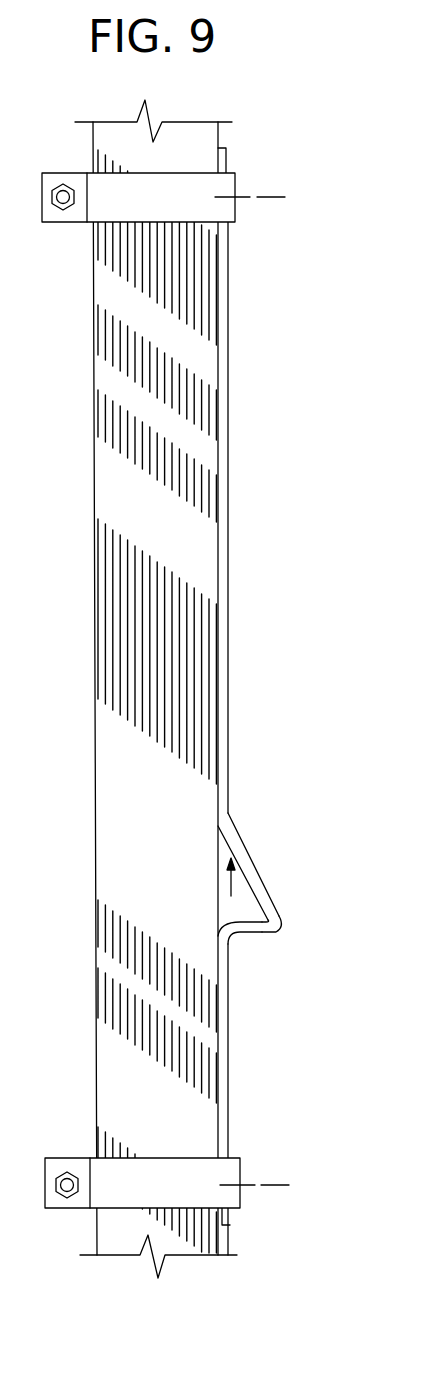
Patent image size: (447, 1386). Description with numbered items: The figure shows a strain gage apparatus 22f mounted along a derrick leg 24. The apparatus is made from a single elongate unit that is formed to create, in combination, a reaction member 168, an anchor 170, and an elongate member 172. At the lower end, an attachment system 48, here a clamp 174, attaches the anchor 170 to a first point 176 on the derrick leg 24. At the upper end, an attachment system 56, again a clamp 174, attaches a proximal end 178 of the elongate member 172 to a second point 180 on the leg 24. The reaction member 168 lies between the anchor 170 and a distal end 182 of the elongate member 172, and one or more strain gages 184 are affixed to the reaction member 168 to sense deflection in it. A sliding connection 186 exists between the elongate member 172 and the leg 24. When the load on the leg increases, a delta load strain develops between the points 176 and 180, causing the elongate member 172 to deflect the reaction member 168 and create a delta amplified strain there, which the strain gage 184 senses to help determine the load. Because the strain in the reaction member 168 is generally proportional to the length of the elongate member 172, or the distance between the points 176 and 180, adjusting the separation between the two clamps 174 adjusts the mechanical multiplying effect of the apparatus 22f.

The strain gage apparatus 22f is at (213, 689).
The derrick leg 24 is at (218, 552).
The elongate member 172 is at (228, 688).
The distal end 182 is at (268, 893).
The reaction member 168 is at (263, 934).
The strain gage 184 is at (245, 937).
The sliding connection 186 is at (231, 896).
The proximal end 178 is at (227, 162).
The anchor 170 is at (230, 1215).
The second point 180 is at (215, 196).
The first point 176 is at (220, 1184).
The clamp 174 is at (73, 223).
The attachment system 56 is at (275, 197).
The attachment system 48 is at (245, 1185).